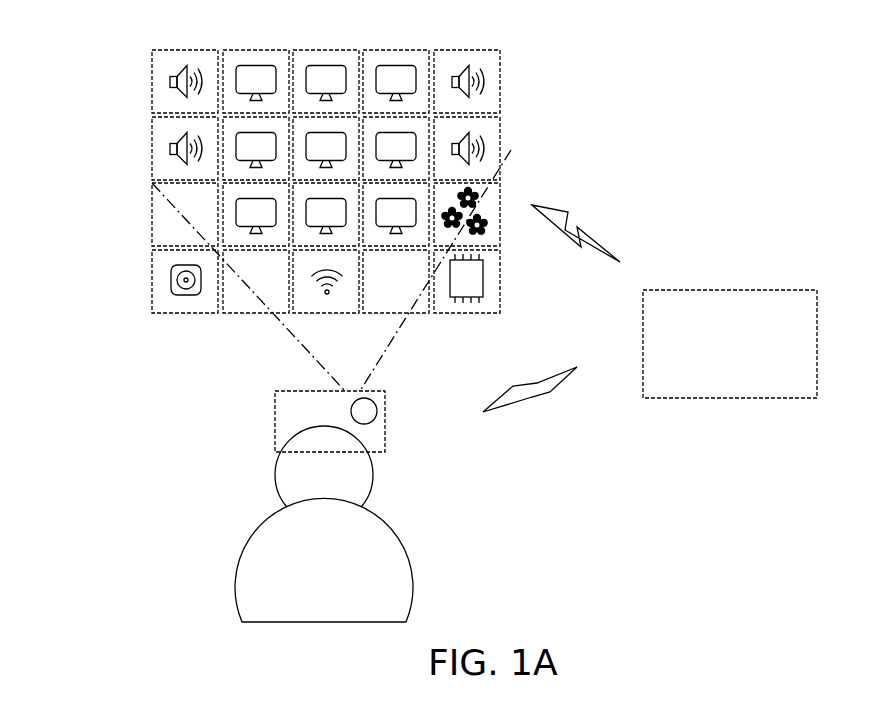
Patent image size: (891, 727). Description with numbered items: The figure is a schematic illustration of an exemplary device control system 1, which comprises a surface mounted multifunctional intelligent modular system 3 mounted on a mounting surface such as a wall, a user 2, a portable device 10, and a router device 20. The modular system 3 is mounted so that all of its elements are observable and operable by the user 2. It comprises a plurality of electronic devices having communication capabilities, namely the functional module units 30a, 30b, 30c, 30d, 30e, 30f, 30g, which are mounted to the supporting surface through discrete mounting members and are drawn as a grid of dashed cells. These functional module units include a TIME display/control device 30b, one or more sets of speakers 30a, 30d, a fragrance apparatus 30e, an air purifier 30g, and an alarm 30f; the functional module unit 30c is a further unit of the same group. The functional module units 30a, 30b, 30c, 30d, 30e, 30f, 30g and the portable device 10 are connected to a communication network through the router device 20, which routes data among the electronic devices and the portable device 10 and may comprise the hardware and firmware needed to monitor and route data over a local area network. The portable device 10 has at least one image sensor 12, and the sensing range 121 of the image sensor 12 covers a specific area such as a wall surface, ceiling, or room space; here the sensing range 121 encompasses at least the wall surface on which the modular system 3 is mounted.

The device control system 1 is at (770, 93).
The user 2 is at (407, 550).
The modular system 3 is at (117, 102).
The portable device 10 is at (285, 408).
The image sensor 12 is at (371, 409).
The sensing range 121 is at (360, 355).
The router device 20 is at (748, 290).
The speakers 30a is at (170, 58).
The TIME display/control device 30b is at (322, 65).
The functional module unit 30c is at (395, 65).
The speakers 30d is at (499, 80).
The fragrance apparatus 30e is at (497, 200).
The alarm 30f is at (162, 272).
The air purifier 30g is at (478, 300).